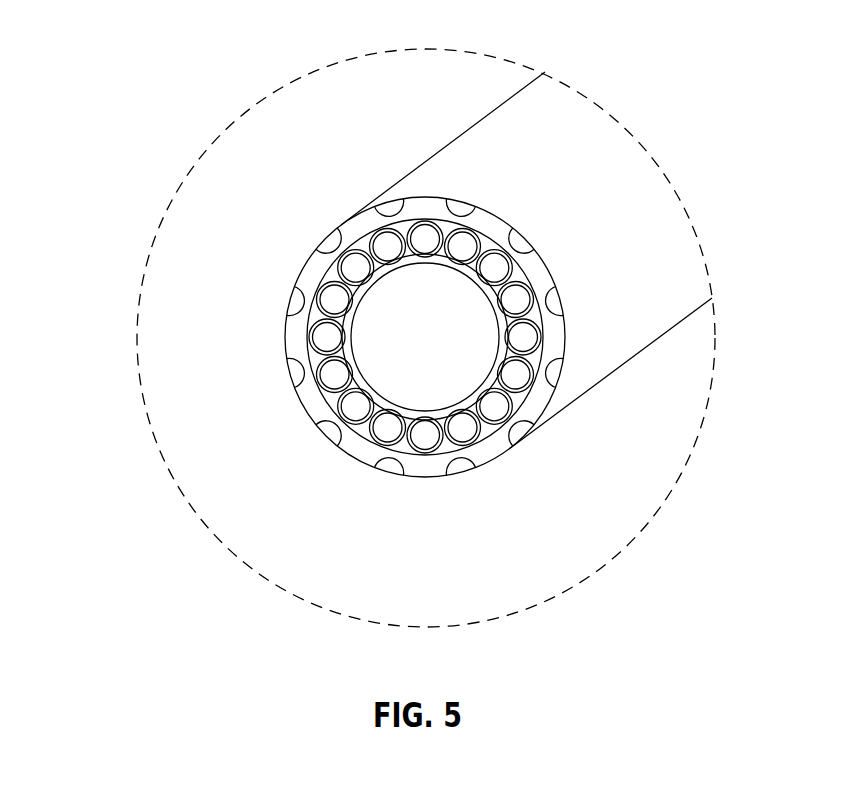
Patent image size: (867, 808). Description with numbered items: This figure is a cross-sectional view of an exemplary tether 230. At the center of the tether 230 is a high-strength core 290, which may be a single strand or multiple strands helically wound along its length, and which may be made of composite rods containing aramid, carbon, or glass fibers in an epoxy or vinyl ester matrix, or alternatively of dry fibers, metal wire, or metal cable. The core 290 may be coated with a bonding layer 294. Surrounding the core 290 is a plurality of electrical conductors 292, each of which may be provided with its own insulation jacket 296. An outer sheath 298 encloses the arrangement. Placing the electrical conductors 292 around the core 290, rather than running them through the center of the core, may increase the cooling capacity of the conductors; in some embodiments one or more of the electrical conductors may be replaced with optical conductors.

The tether 230 is at (395, 117).
The core 290 is at (445, 350).
The electrical conductors 292 is at (427, 437).
The bonding layer 294 is at (313, 297).
The insulation jacket 296 is at (310, 381).
The outer sheath 298 is at (297, 335).